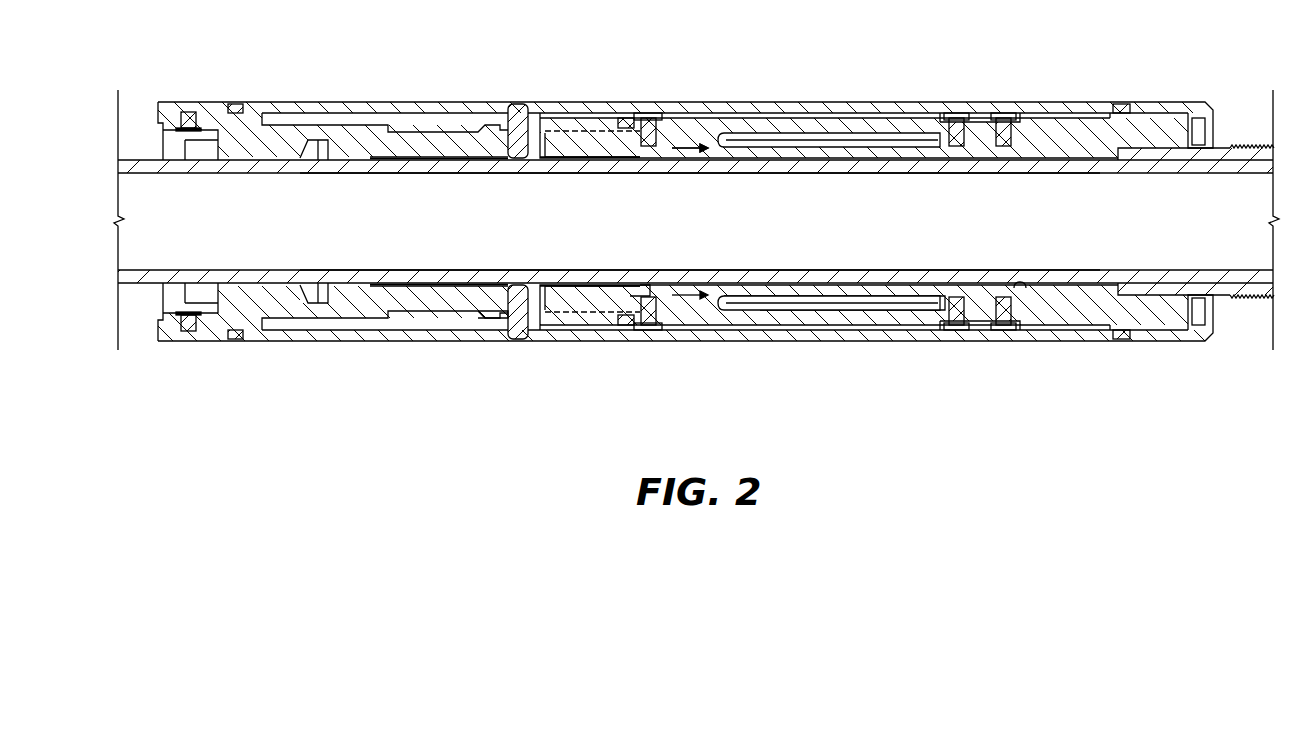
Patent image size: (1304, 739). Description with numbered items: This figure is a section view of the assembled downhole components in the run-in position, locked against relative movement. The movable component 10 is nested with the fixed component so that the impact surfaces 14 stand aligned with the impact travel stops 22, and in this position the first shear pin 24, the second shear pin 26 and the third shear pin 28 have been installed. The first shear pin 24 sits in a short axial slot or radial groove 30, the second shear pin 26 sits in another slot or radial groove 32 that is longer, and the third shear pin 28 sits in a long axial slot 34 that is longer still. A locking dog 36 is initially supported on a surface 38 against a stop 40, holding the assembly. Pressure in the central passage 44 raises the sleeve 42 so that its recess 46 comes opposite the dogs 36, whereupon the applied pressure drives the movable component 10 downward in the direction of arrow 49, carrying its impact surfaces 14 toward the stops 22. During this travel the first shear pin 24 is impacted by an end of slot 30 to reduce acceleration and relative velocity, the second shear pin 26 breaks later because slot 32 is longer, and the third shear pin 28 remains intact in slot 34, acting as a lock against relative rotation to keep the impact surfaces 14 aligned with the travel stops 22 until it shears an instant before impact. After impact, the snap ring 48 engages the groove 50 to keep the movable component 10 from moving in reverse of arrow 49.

The movable component 10 is at (698, 300).
The impact surfaces 14 is at (740, 300).
The impact travel stops 22 is at (940, 310).
The first shear pin 24 is at (648, 118).
The second shear pin 26 is at (1003, 118).
The third shear pin 28 is at (957, 118).
The short axial slot or radial groove 30 is at (648, 290).
The short axial slot or radial groove 32 is at (1016, 287).
The long axial slot 34 is at (872, 300).
The locking dog 36 is at (516, 113).
The surface 38 is at (470, 157).
The stop 40 is at (500, 330).
The sleeve 42 is at (140, 168).
The passage 44 is at (518, 225).
The recess 46 is at (612, 157).
The snap ring 48 is at (188, 118).
The arrow 49 is at (690, 148).
The groove 50 is at (414, 125).